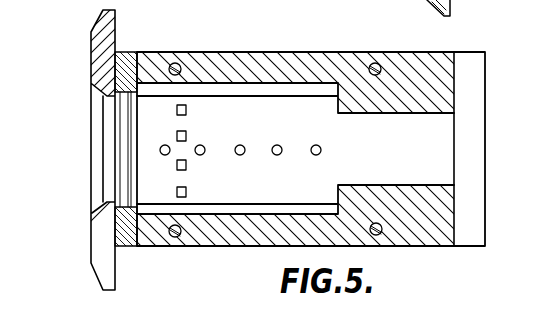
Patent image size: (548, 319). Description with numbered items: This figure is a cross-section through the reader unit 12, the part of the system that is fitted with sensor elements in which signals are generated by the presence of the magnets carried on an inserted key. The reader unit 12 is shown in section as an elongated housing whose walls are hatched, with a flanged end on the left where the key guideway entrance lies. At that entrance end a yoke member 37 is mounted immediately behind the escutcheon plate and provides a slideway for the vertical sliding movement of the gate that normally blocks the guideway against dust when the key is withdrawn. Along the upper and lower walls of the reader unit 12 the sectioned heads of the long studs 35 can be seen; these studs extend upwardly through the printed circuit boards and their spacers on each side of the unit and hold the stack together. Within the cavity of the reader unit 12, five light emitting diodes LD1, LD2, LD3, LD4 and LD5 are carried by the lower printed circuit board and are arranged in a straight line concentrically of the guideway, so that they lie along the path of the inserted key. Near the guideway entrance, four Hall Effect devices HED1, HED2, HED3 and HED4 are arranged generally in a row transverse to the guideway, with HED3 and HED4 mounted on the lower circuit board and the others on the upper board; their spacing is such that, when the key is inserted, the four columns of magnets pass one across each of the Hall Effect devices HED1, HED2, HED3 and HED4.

The reader unit 12 is at (177, 52).
The long studs 35 is at (372, 62).
The yoke member 37 is at (128, 62).
The Hall Effect device HED1 is at (188, 108).
The Hall Effect device HED2 is at (181, 136).
The Hall Effect device HED3 is at (186, 166).
The Hall Effect device HED4 is at (185, 196).
The light emitting diode LD1 is at (160, 147).
The light emitting diode LD2 is at (200, 145).
The light emitting diode LD3 is at (245, 152).
The light emitting diode LD4 is at (277, 145).
The light emitting diode LD5 is at (320, 153).